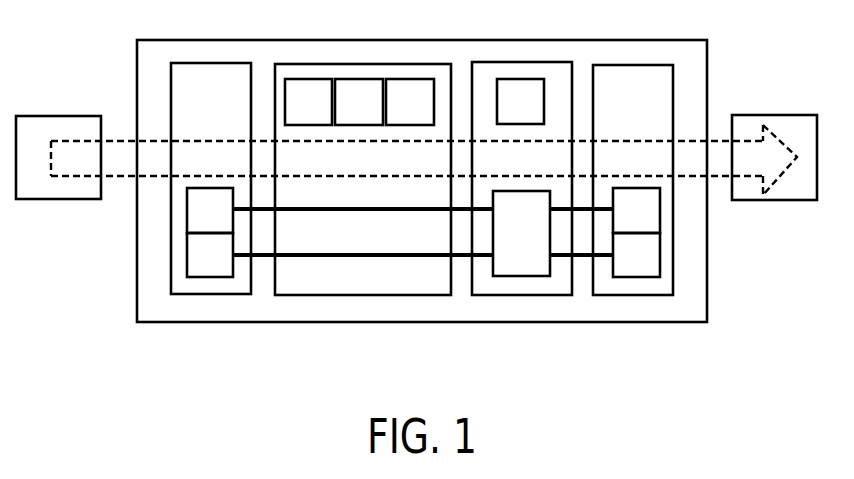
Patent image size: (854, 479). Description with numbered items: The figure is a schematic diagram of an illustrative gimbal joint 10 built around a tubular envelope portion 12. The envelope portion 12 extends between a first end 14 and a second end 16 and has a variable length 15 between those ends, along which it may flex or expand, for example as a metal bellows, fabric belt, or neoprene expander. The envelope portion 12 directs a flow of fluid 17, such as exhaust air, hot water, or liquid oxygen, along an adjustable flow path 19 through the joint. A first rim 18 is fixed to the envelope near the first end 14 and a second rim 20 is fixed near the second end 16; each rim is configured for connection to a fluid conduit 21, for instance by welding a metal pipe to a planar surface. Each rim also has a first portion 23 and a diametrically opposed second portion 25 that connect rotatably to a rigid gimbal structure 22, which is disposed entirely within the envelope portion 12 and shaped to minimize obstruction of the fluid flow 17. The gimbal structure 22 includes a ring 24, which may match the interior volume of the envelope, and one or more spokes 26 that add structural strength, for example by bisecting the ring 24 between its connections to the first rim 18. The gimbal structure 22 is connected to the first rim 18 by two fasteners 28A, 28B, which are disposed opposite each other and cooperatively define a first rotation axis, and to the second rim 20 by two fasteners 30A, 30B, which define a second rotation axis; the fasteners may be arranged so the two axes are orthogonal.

The gimbal joint 10 is at (153, 53).
The envelope portion 12 is at (293, 64).
The first end 14 is at (327, 79).
The variable length 15 is at (360, 79).
The second end 16 is at (407, 79).
The flow of fluid 17 is at (123, 145).
The first rim 18 is at (200, 63).
The adjustable flow path 19 is at (122, 180).
The second rim 20 is at (652, 65).
The fluid conduit 21 is at (53, 116).
The rigid gimbal structure 22 is at (548, 62).
The first portion 23 is at (195, 226).
The ring 24 is at (498, 277).
The second portion 25 is at (195, 258).
The spokes 26 is at (522, 79).
The first fastener 28A is at (263, 257).
The second fastener 28B is at (320, 211).
The third fastener 30A is at (560, 211).
The fourth fastener 30B is at (602, 257).